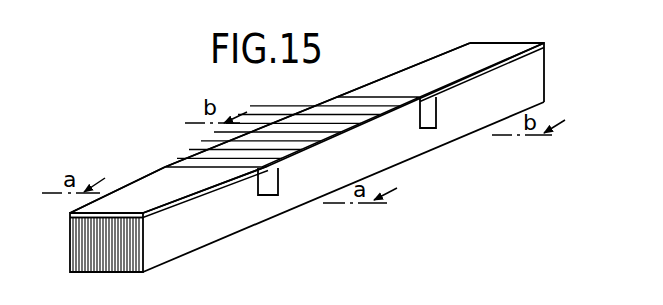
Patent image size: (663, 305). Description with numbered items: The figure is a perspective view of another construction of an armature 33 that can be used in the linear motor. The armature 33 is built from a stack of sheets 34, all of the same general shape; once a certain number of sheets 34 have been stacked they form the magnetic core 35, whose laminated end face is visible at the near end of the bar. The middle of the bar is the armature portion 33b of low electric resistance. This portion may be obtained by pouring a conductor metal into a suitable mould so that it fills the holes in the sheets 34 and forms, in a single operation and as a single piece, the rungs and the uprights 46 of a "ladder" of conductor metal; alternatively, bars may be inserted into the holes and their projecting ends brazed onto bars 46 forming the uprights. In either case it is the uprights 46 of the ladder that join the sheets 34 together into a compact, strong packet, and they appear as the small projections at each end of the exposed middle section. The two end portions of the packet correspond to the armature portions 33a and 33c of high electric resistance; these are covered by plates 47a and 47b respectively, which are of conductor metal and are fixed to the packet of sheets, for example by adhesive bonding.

The armature 33 is at (400, 57).
The armature portion of high electric resistance 33a is at (148, 176).
The armature portion of low electric resistance 33b is at (305, 129).
The armature portion of high electric resistance 33c is at (442, 53).
The sheets 34 is at (92, 257).
The magnetic core 35 is at (93, 228).
The uprights of the ladder 46 is at (262, 125).
The plate 47a is at (128, 203).
The plate 47b is at (500, 55).